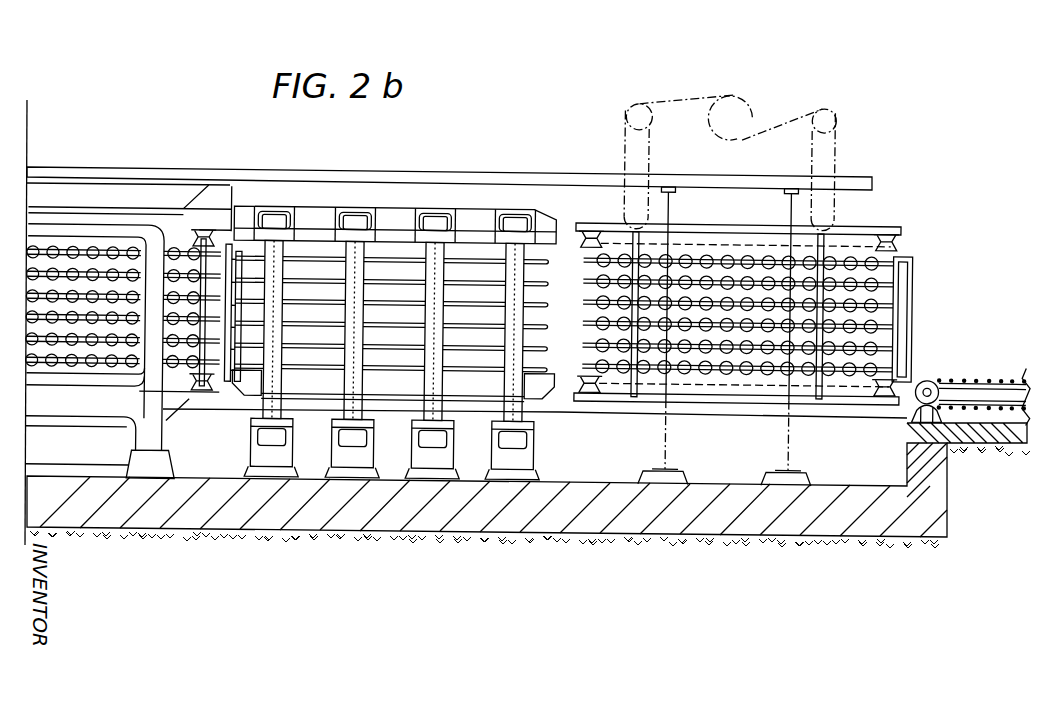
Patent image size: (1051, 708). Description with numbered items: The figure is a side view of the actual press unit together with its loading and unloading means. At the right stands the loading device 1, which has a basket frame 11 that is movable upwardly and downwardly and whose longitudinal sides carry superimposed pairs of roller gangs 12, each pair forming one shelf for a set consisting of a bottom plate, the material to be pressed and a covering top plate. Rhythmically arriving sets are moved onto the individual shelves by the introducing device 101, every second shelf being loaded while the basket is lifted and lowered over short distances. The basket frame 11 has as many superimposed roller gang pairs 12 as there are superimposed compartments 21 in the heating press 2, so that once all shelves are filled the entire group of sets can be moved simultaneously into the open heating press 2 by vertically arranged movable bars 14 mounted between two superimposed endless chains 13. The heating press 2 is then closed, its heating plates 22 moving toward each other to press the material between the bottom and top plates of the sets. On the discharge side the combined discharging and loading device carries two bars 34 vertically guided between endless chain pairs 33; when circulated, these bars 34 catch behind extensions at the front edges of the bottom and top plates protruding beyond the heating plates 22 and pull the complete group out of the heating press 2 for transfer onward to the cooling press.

The loading device 1 is at (742, 72).
The heating press 2 is at (434, 158).
The basket frame 11 is at (688, 228).
The roller gangs 12 is at (721, 330).
The endless chains 13 is at (741, 246).
The movable bars 14 is at (913, 272).
The introducing device 101 is at (937, 380).
The compartments 21 is at (481, 345).
The heating plates 22 is at (398, 347).
The endless chain pairs 33 is at (101, 225).
The bars 34 is at (237, 248).